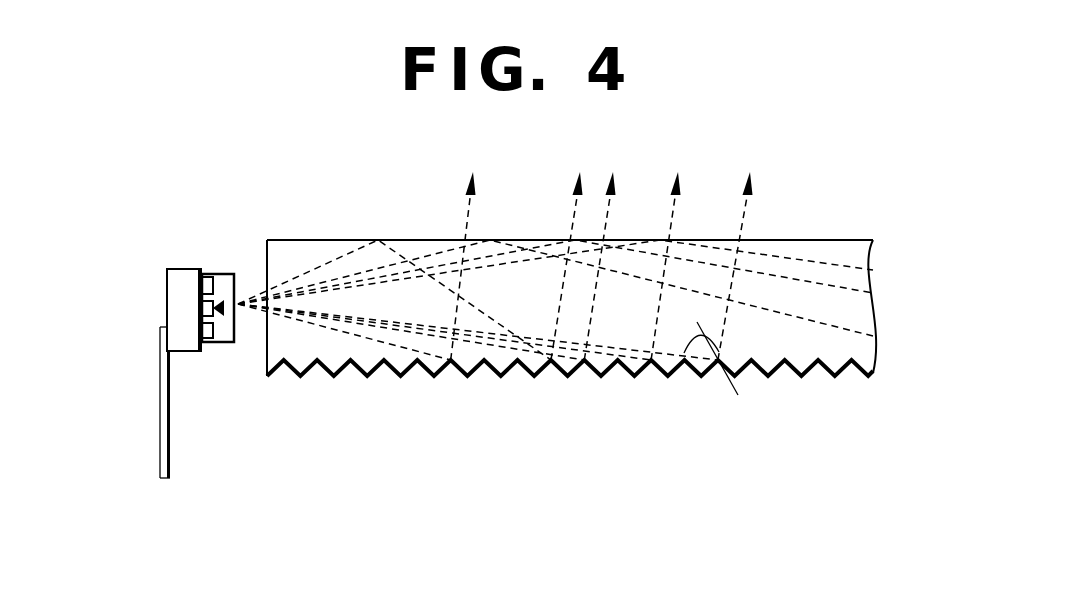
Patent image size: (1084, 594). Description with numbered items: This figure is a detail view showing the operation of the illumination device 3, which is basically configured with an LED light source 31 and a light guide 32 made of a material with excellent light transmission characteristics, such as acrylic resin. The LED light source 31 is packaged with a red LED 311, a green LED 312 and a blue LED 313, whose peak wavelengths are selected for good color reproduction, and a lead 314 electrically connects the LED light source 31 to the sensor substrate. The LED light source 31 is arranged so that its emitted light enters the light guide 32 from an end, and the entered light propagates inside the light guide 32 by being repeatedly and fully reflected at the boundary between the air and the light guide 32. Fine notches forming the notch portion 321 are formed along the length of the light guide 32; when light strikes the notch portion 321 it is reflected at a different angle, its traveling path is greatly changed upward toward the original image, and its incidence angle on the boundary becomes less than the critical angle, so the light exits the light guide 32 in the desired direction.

The illumination device 3 is at (513, 430).
The LED light source 31 is at (183, 275).
The red (R) LED 311 is at (208, 285).
The green (G) LED 312 is at (231, 322).
The blue (B) LED 313 is at (211, 312).
The lead 314 is at (165, 478).
The light guide 32 is at (294, 252).
The notch portion 321 is at (682, 368).